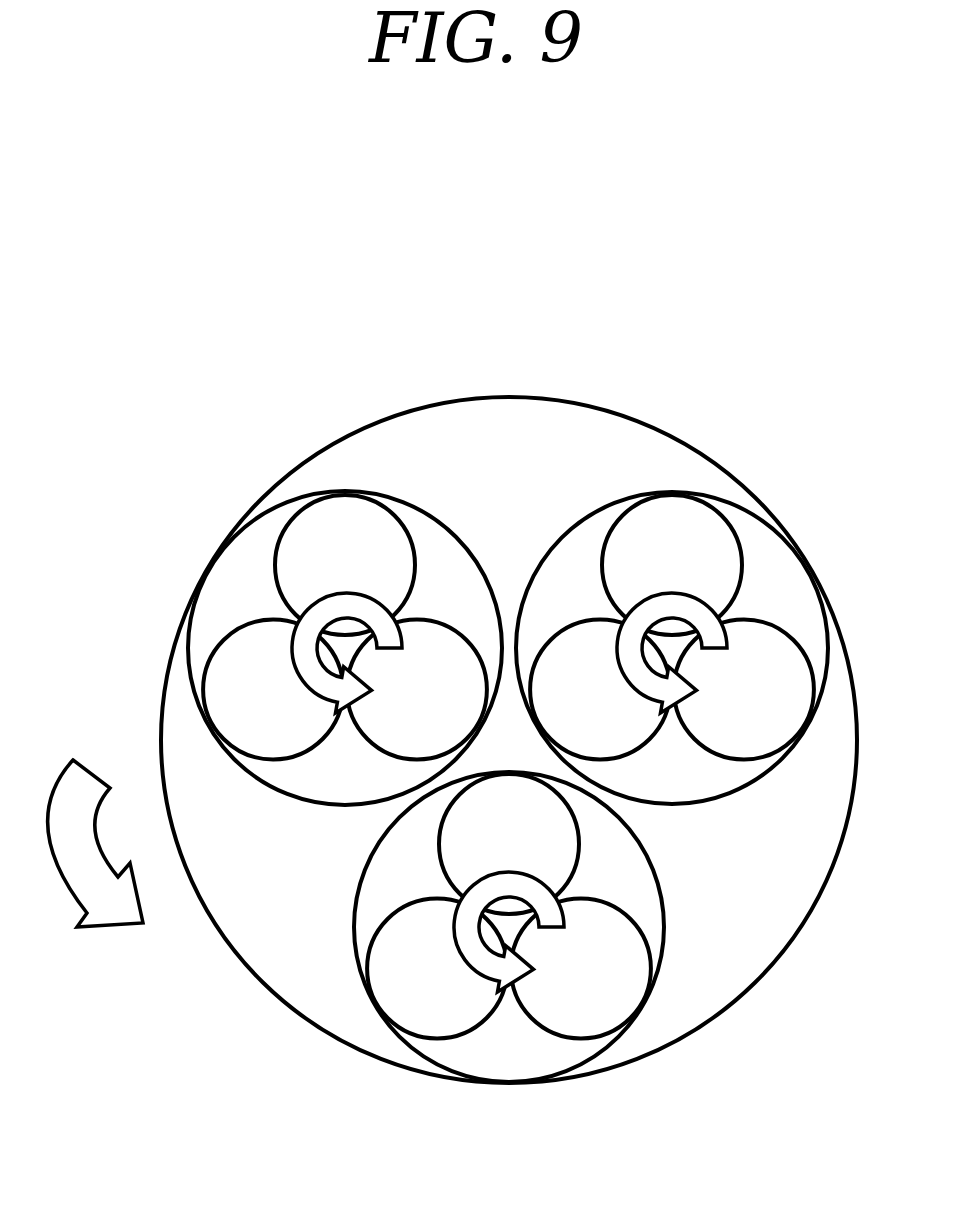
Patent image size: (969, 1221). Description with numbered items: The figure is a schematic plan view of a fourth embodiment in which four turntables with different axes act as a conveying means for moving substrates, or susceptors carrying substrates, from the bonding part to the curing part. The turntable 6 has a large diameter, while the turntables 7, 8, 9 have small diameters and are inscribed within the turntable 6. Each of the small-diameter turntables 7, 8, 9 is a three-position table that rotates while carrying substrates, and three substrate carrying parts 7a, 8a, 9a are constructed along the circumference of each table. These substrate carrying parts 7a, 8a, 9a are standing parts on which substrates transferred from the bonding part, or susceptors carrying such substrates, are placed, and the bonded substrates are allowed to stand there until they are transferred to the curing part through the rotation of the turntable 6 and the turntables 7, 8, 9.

The turntable 6 is at (605, 427).
The turntable 7 is at (423, 545).
The substrate carrying part 7a is at (322, 525).
The turntable 8 is at (640, 897).
The substrate carrying part 8a is at (623, 987).
The turntable 9 is at (783, 565).
The substrate carrying part 9a is at (673, 518).